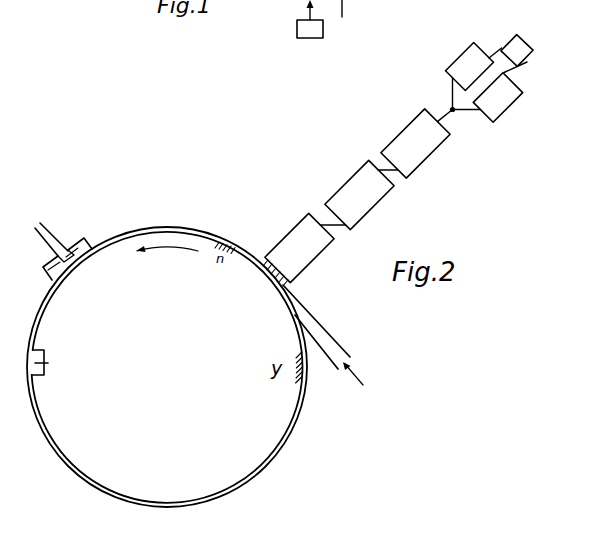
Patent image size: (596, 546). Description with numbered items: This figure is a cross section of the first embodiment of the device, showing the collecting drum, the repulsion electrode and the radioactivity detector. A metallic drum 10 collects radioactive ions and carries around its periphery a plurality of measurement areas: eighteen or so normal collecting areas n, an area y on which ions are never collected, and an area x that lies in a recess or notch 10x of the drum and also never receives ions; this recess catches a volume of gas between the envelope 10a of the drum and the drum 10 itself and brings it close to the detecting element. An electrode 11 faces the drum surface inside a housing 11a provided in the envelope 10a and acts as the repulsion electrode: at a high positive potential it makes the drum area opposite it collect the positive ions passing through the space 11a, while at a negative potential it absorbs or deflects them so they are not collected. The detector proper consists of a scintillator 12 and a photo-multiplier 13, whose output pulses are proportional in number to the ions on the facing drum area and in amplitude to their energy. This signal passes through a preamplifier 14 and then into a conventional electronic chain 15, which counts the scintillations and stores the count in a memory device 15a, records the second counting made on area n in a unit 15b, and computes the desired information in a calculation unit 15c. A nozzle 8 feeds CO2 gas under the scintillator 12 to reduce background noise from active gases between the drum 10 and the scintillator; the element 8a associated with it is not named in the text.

The web feed unit 8a is at (297, 29).
The nozzle 8 is at (331, 337).
The metallic drum 10 is at (171, 231).
The envelope 10a is at (147, 227).
The recess or notch 10x is at (44, 376).
The repulsion electrode 11 is at (47, 229).
The housing 11a is at (80, 243).
The scintillator 12 is at (261, 257).
The photo-multiplier 13 is at (306, 265).
The preamplifier 14 is at (368, 209).
The electronic chain 15 is at (432, 151).
The memory device 15a is at (464, 63).
The unit 15b is at (504, 104).
The calculation unit 15c is at (519, 33).